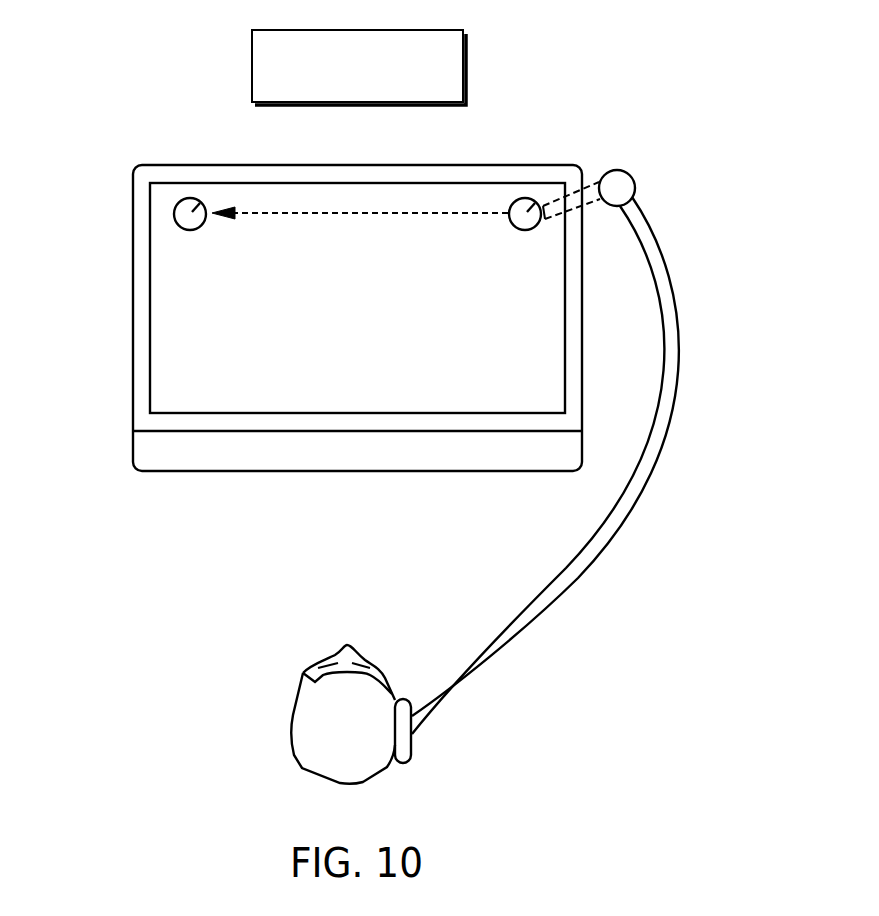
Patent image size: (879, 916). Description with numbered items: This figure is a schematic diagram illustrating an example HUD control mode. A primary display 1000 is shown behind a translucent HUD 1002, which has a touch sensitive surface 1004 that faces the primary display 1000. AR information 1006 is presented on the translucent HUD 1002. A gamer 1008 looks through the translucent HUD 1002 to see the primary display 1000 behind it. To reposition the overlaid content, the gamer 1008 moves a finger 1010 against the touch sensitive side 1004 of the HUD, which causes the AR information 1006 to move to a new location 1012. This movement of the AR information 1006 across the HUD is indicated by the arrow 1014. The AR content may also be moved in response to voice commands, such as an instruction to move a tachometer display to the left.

The primary display 1000 is at (252, 65).
The translucent HUD 1002 is at (177, 300).
The touch sensitive surface 1004 is at (133, 355).
The AR information 1006 is at (525, 231).
The gamer 1008 is at (290, 730).
The finger 1010 is at (595, 180).
The new location 1012 is at (173, 217).
The arrow 1014 is at (359, 216).